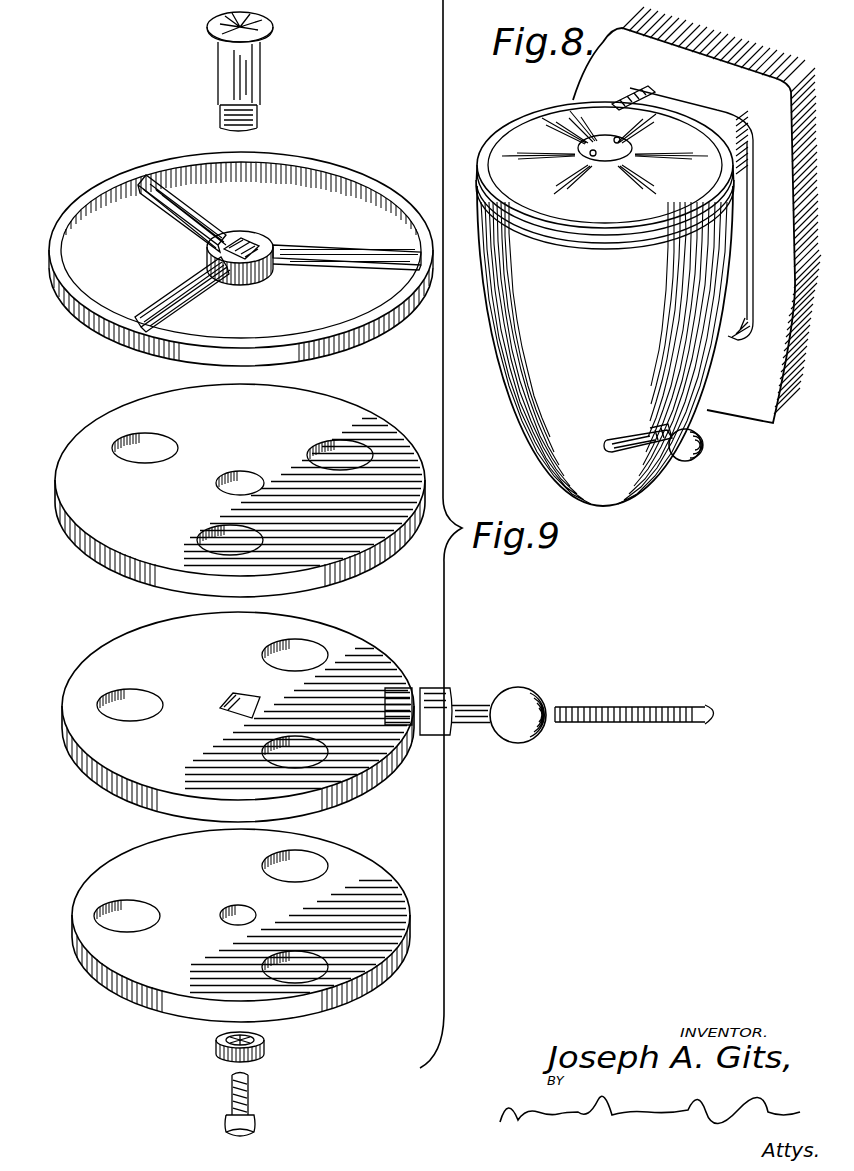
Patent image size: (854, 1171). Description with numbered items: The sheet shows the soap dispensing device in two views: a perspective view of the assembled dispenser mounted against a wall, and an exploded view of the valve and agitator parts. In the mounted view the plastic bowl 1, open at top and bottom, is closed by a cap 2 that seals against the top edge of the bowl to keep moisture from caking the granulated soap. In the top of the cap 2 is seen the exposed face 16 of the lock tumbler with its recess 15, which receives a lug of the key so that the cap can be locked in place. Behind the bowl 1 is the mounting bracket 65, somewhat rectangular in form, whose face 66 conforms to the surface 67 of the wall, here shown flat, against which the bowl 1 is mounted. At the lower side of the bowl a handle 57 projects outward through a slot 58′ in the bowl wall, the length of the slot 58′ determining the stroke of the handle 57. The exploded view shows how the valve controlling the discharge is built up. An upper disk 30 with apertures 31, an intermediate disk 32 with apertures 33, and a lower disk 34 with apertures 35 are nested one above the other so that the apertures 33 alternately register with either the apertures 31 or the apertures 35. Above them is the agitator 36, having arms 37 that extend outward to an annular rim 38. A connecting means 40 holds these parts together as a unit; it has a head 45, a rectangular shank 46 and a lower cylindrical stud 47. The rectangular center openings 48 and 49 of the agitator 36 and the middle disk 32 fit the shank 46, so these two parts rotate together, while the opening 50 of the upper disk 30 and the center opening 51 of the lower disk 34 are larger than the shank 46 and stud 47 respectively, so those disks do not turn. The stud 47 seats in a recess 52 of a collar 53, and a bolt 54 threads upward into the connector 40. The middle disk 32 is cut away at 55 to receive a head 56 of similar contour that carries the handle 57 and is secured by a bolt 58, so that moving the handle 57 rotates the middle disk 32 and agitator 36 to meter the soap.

In FIG. 8, the bowl 1 is at (503, 355).
In FIG. 8, the cap 2 is at (592, 169).
In FIG. 8, the recess 15 is at (616, 138).
In FIG. 8, the exposed face of tumbler 16 is at (580, 142).
In FIG. 9, the upper disk 30 is at (240, 490).
In FIG. 9, the apertures 31 is at (150, 440).
In FIG. 9, the intermediate disk 32 is at (253, 715).
In FIG. 9, the apertures 33 is at (132, 695).
In FIG. 9, the lower disk 34 is at (243, 925).
In FIG. 9, the apertures 35 is at (140, 910).
In FIG. 9, the agitator 36 is at (257, 240).
In FIG. 9, the arms 37 is at (345, 260).
In FIG. 9, the annular rim 38 is at (241, 256).
In FIG. 9, the connecting means 40 is at (233, 67).
In FIG. 9, the head 45 is at (272, 27).
In FIG. 9, the rectangular shank 46 is at (262, 72).
In FIG. 9, the lower cylindrical stud 47 is at (258, 113).
In FIG. 9, the center opening of agitator 48 is at (240, 236).
In FIG. 9, the center opening of middle disk 49 is at (226, 702).
In FIG. 9, the opening 50 is at (237, 473).
In FIG. 9, the center opening 51 is at (230, 910).
In FIG. 9, the recess 52 is at (266, 1042).
In FIG. 9, the collar 53 is at (265, 1054).
In FIG. 9, the bolt 54 is at (250, 1095).
In FIG. 9, the cut-away recess 55 is at (400, 692).
In FIG. 9, the head 56 is at (452, 692).
In FIG. 9, the handle 57 is at (522, 700).
In FIG. 8, the handle 57 is at (702, 438).
In FIG. 9, the bolt 58 is at (615, 708).
In FIG. 8, the slot 58′ is at (640, 437).
In FIG. 8, the mounting bracket 65 is at (633, 90).
In FIG. 8, the face 66 is at (742, 97).
In FIG. 8, the surface 67 is at (605, 62).